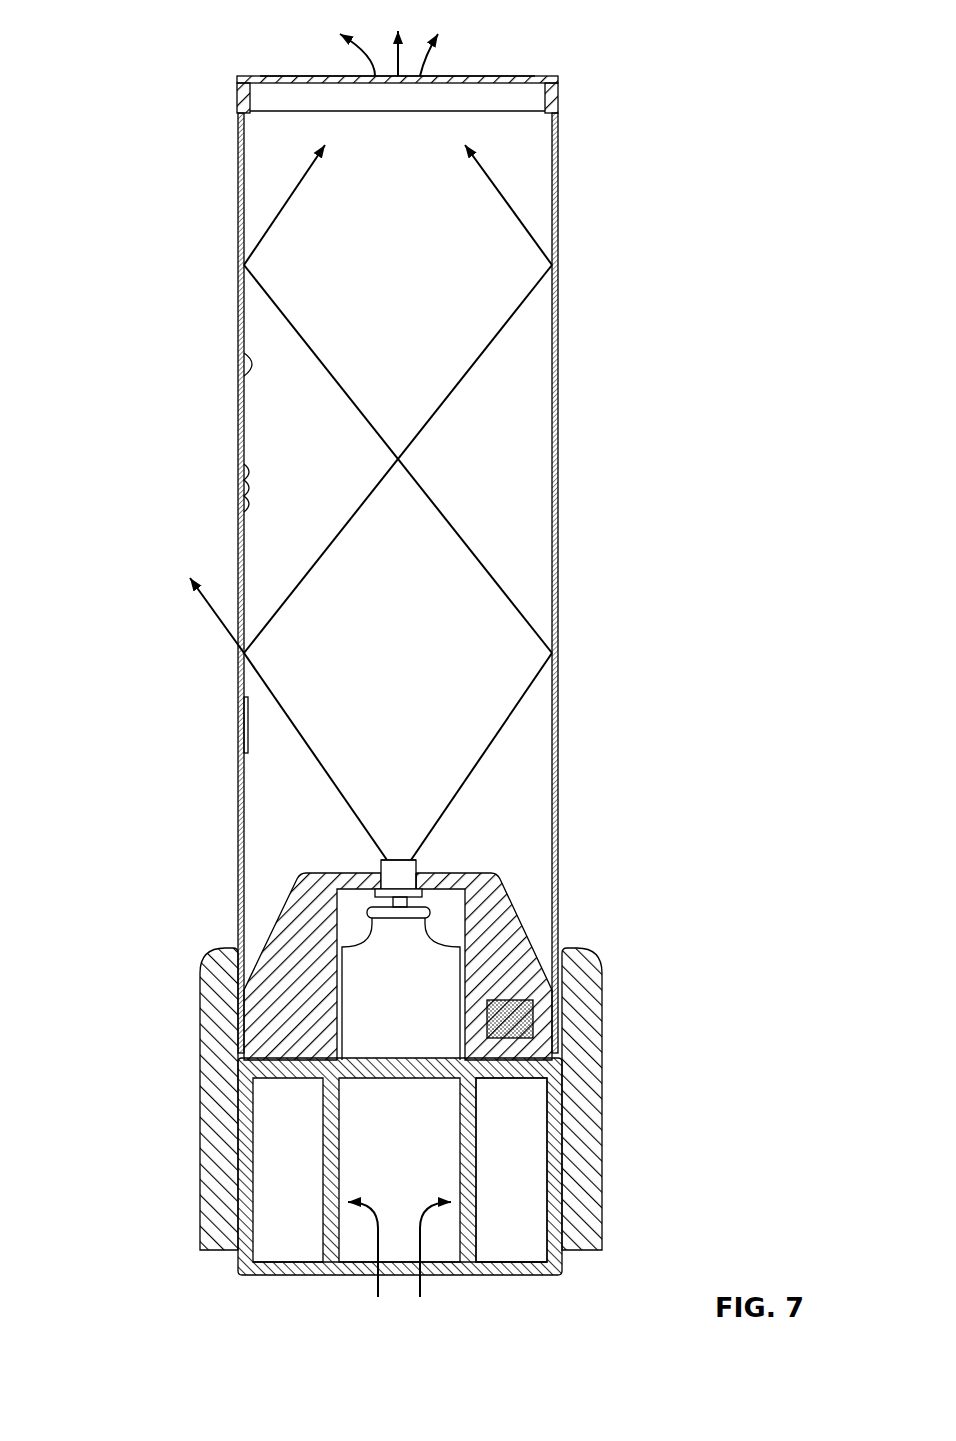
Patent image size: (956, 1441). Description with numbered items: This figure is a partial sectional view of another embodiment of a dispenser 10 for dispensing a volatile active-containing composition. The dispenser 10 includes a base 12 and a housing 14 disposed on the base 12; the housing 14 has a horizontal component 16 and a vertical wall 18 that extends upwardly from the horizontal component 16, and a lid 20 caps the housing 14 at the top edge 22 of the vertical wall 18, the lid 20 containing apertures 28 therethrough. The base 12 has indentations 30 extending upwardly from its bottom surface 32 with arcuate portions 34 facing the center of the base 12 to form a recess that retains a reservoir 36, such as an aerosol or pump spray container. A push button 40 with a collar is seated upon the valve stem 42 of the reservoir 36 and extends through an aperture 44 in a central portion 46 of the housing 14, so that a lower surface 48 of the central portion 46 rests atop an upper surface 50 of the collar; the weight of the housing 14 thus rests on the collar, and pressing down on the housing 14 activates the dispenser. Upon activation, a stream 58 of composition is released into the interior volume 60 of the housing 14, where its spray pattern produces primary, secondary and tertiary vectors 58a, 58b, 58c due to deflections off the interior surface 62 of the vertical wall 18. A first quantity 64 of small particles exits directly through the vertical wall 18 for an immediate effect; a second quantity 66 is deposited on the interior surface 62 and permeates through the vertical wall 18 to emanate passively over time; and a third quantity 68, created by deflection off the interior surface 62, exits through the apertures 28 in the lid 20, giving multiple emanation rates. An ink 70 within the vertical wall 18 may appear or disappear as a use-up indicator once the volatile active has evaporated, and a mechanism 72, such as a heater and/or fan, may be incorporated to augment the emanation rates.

The dispenser 10 is at (152, 54).
The base 12 is at (549, 1275).
The housing 14 is at (603, 1081).
The horizontal component 16 is at (583, 947).
The vertical wall 18 is at (558, 178).
The lid 20 is at (547, 77).
The top edge 22 is at (558, 81).
The apertures 28 is at (508, 72).
The indentations 30 is at (533, 1197).
The bottom surface 32 is at (258, 1276).
The arcuate portions 34 is at (399, 1261).
The reservoir 36 is at (363, 995).
The push button 40 is at (377, 867).
The valve stem 42 is at (407, 901).
The aperture 44 is at (372, 862).
The central portion 46 is at (485, 872).
The lower surface 48 is at (345, 893).
The upper surface 50 is at (419, 870).
The stream 58 is at (527, 619).
The primary vector 58a is at (328, 772).
The secondary vector 58b is at (309, 572).
The tertiary vector 58c is at (259, 243).
The interior volume 60 is at (532, 487).
The interior surface 62 is at (240, 356).
The first quantity 64 is at (215, 613).
The second quantity 66 is at (252, 500).
The third quantity 68 is at (373, 63).
The ink 70 is at (249, 733).
The mechanism 72 is at (523, 1013).